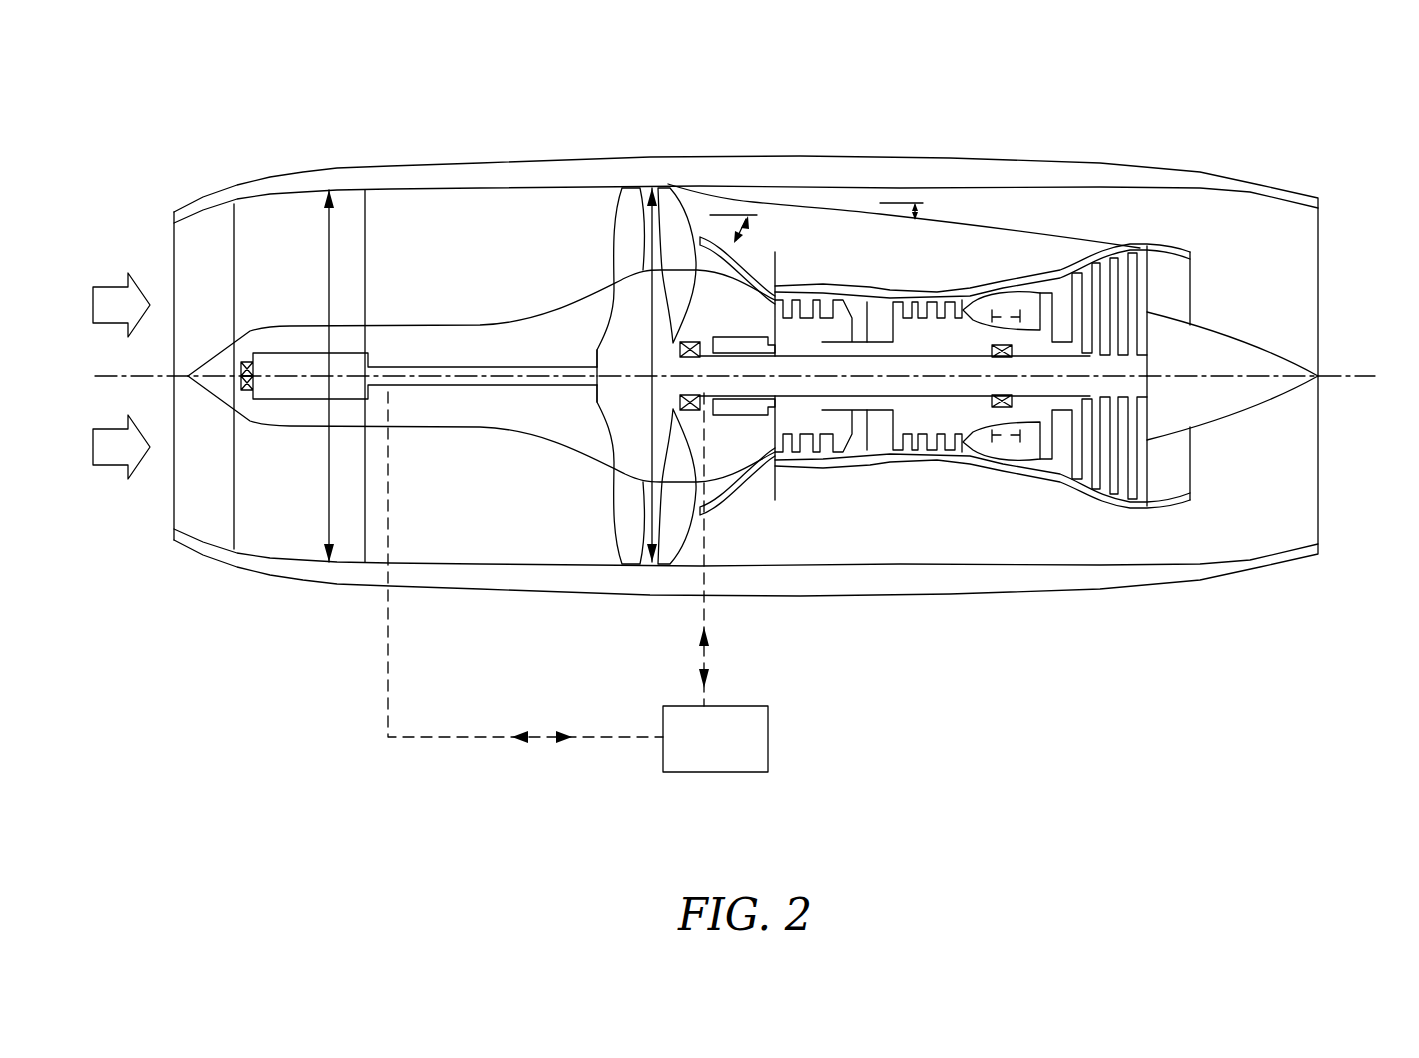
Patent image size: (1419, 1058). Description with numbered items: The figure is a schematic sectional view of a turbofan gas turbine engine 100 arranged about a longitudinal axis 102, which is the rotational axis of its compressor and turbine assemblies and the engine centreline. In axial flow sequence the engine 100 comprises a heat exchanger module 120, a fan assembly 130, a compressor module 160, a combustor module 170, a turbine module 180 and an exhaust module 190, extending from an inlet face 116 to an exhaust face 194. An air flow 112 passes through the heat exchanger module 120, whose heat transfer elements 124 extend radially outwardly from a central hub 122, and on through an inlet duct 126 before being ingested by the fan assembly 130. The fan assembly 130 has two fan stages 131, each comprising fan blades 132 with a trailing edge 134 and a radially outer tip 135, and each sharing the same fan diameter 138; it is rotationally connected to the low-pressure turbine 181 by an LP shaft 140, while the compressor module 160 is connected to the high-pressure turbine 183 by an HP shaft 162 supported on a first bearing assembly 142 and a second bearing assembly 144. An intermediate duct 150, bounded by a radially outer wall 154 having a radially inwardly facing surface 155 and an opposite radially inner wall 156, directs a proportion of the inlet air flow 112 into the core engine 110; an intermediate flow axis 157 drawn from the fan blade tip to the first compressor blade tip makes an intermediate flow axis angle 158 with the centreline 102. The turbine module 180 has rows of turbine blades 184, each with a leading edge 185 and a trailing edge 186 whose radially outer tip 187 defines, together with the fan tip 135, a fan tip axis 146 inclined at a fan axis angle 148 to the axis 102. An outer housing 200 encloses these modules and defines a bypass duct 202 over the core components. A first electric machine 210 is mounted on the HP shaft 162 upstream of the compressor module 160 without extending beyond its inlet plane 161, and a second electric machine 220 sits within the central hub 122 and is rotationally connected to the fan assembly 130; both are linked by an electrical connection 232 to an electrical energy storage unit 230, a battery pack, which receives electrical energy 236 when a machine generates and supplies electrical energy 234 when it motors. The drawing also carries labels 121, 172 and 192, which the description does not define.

The turbofan gas turbine engine 100 is at (805, 84).
The longitudinal axis 102 is at (132, 375).
The core engine 110 is at (867, 505).
The air flow 112 is at (110, 283).
The inlet face 116 is at (174, 247).
The heat exchanger module 120 is at (262, 533).
The fan diameter 121 is at (327, 240).
The central hub 122 is at (217, 400).
The heat transfer elements 124 is at (365, 537).
The inlet duct 126 is at (493, 540).
The fan assembly 130 is at (622, 427).
The fan stage 131 is at (623, 512).
The fan blades 132 is at (650, 186).
The trailing edge 134 is at (690, 186).
The radially outer tip 135 is at (625, 186).
The fan diameter 138 is at (673, 337).
The LP shaft 140 is at (465, 366).
The first bearing assembly 142 is at (680, 402).
The second bearing assembly 144 is at (997, 346).
The fan tip axis 146 is at (980, 228).
The fan axis angle 148 is at (922, 207).
The intermediate duct 150 is at (748, 464).
The radially outer wall 154 is at (762, 499).
The radially inwardly facing surface 155 is at (732, 480).
The radially inner wall 156 is at (720, 472).
The intermediate flow axis 157 is at (738, 214).
The intermediate flow axis angle 158 is at (747, 234).
The compressor module 160 is at (822, 327).
The inlet plane 161 is at (792, 204).
The HP shaft 162 is at (867, 342).
The combustor module 170 is at (1005, 477).
The combustor liner 172 is at (987, 477).
The turbine module 180 is at (1112, 489).
The low-pressure turbine 181 is at (1028, 483).
The high-pressure turbine 183 is at (1128, 483).
The turbine blades 184 is at (1072, 497).
The leading edge 185 is at (1073, 273).
The trailing edge 186 is at (1143, 247).
The radially outer tip 187 is at (1140, 247).
The exhaust module 190 is at (1173, 468).
The exhaust cone 192 is at (1248, 340).
The exhaust face 194 is at (1318, 468).
The outer housing 200 is at (903, 597).
The bypass duct 202 is at (813, 537).
The first electric machine 210 is at (728, 337).
The second electric machine 220 is at (343, 352).
The electrical energy storage unit 230 is at (715, 738).
The electrical connection 232 is at (640, 737).
The electrical energy 234 is at (518, 739).
The electrical energy 236 is at (565, 739).